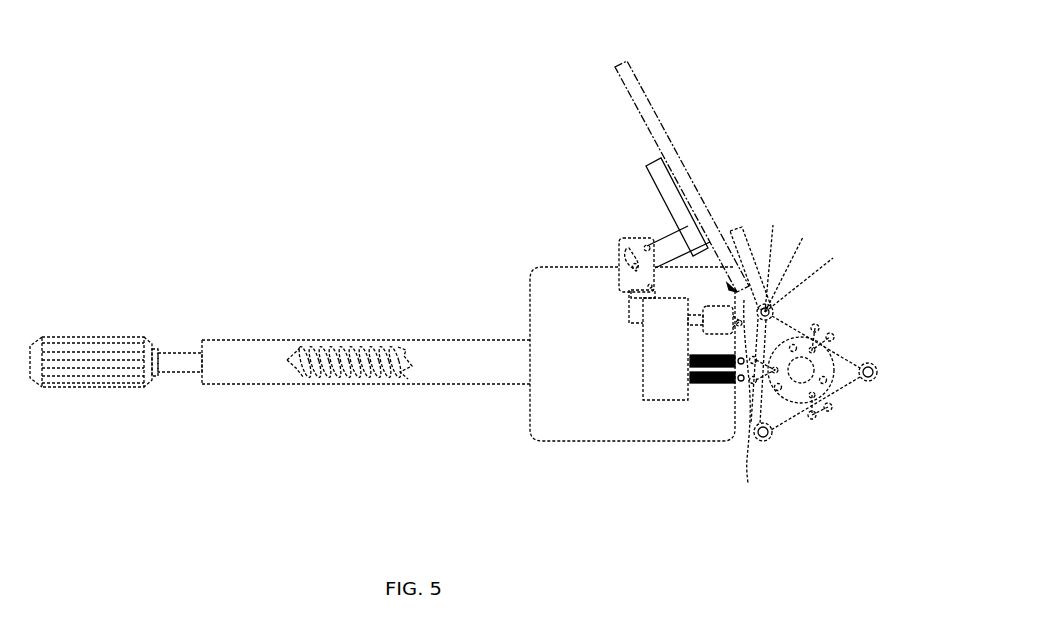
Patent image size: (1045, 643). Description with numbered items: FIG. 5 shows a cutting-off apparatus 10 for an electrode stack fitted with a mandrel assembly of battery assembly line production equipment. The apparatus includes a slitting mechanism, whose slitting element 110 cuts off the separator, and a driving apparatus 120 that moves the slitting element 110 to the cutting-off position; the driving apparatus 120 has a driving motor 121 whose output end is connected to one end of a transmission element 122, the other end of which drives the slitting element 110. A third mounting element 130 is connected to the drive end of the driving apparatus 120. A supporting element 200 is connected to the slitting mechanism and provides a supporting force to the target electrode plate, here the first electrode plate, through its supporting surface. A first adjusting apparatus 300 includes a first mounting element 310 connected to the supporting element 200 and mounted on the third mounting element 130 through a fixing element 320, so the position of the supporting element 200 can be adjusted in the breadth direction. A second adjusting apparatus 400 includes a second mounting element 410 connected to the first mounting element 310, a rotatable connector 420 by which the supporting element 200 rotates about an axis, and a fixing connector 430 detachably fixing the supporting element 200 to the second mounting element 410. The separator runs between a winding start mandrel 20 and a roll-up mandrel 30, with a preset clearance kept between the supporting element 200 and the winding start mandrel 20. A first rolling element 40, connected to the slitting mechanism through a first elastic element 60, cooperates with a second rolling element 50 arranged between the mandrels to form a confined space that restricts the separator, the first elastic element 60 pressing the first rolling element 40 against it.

The cutting-off apparatus 10 is at (85, 170).
The driving apparatus 120 is at (200, 262).
The driving motor 121 is at (113, 340).
The transmission element 122 is at (213, 340).
The third mounting element 130 is at (650, 347).
The slitting element 110 is at (700, 355).
The first adjusting apparatus 300 is at (462, 270).
The first mounting element 310 is at (640, 310).
The fixing element 320 is at (624, 281).
The second adjusting apparatus 400 is at (537, 155).
The second mounting element 410 is at (620, 262).
The rotatable connector 420 is at (648, 240).
The fixing connector 430 is at (645, 262).
The supporting element 200 is at (608, 64).
The first elastic element 60 is at (693, 400).
The first rolling element 40 is at (732, 400).
The second rolling element 50 is at (820, 424).
The winding start mandrel 20 is at (774, 308).
The roll-up mandrel 30 is at (766, 443).